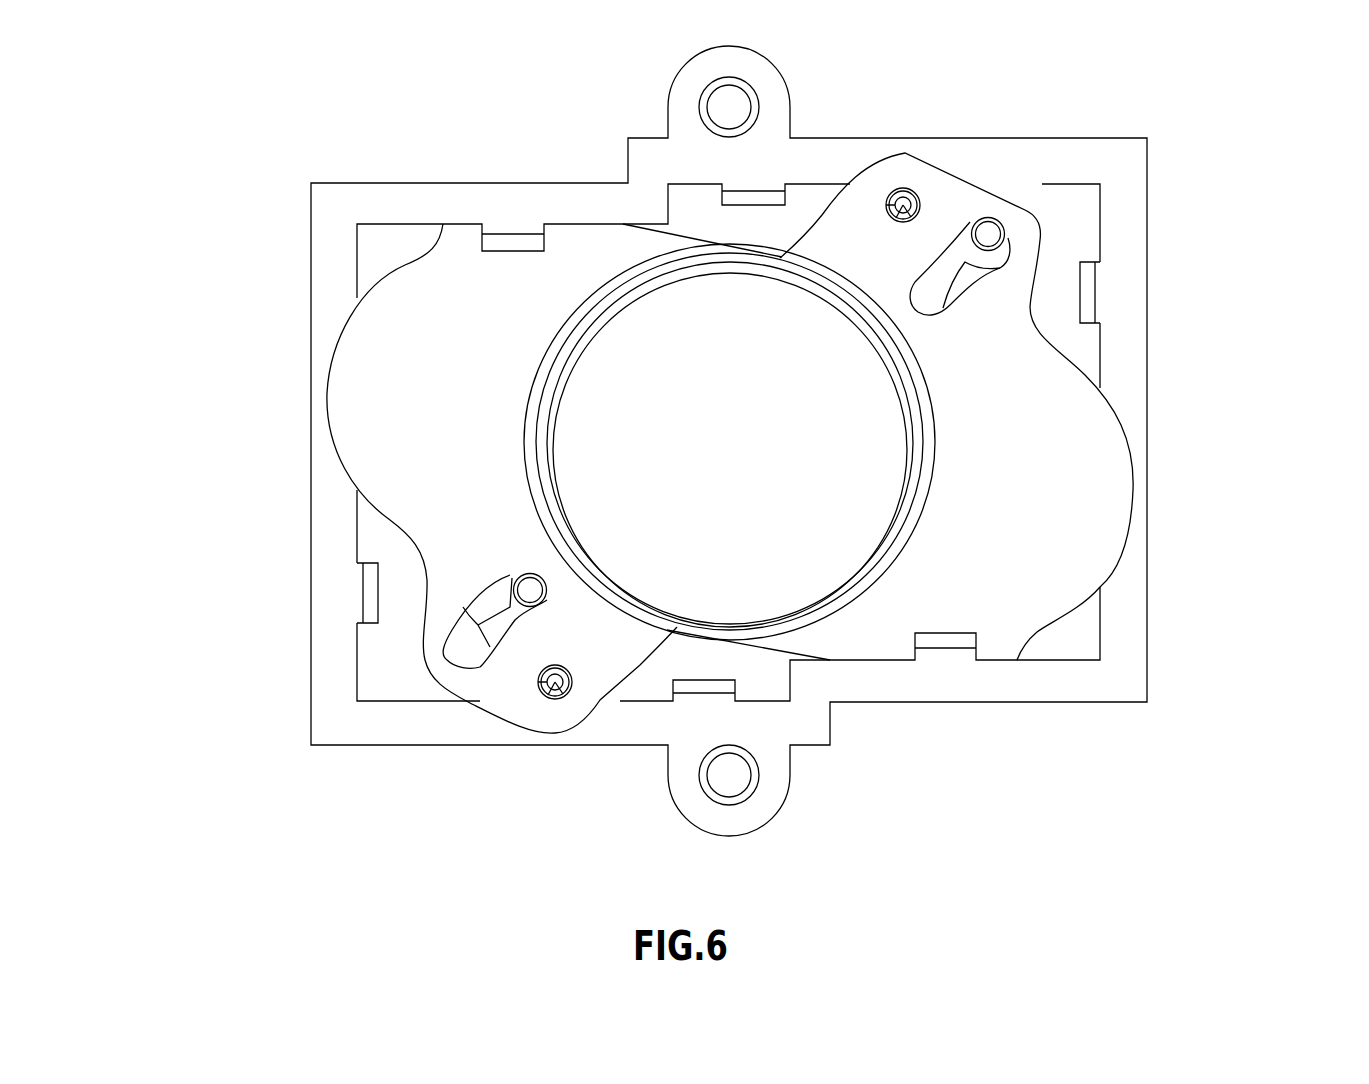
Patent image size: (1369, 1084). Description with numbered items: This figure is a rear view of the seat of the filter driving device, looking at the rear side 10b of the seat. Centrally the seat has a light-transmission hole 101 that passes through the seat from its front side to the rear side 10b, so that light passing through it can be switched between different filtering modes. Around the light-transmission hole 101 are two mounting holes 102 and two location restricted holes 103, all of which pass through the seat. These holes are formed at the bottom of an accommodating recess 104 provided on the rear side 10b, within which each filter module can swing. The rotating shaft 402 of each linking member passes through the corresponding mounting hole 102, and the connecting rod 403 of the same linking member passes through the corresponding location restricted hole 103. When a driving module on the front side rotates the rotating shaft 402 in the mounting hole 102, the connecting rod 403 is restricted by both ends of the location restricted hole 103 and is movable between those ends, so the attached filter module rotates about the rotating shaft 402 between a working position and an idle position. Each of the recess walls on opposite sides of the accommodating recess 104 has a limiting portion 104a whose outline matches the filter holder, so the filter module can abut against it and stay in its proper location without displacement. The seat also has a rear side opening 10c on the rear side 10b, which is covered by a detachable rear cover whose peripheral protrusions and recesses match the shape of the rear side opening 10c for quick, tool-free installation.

The rear side 10b is at (1120, 158).
The rear side opening 10c is at (388, 224).
The light-transmission hole 101 is at (710, 348).
The mounting hole 102 is at (890, 200).
The location restricted hole 103 is at (1000, 273).
The accommodating recess 104 is at (1063, 425).
The limiting portion 104a is at (332, 355).
The rotating shaft 402 is at (905, 205).
The connecting rod 403 is at (985, 232).